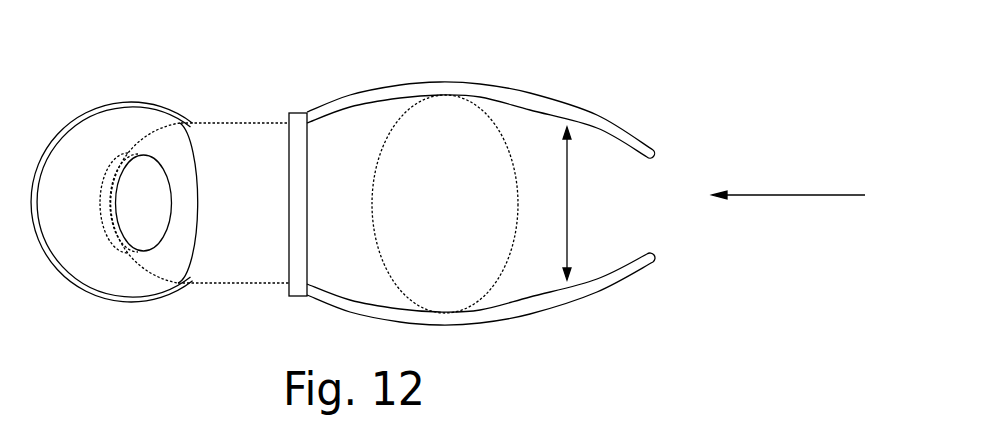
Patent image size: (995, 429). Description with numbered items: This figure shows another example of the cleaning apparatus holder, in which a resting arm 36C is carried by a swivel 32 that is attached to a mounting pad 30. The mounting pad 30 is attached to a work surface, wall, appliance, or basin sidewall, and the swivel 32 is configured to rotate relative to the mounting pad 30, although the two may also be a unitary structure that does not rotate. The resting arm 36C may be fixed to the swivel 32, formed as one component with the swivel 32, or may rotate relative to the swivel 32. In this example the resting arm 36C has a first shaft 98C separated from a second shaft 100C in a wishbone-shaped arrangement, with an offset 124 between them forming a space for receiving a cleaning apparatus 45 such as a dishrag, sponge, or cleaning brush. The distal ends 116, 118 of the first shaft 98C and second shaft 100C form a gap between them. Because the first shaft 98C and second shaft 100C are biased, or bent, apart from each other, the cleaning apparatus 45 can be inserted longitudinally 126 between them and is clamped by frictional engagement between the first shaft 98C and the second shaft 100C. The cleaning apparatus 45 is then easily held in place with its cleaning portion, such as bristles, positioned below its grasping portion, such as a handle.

The mounting pad 30 is at (69, 128).
The swivel 32 is at (181, 128).
The resting arm 36C is at (465, 82).
The cleaning apparatus 45 is at (523, 186).
The first shaft 98C is at (528, 87).
The second shaft 100C is at (532, 304).
The distal end of first shaft 116 is at (655, 147).
The distal end of second shaft 118 is at (651, 257).
The offset 124 is at (568, 175).
The longitudinal insertion direction 126 is at (800, 195).